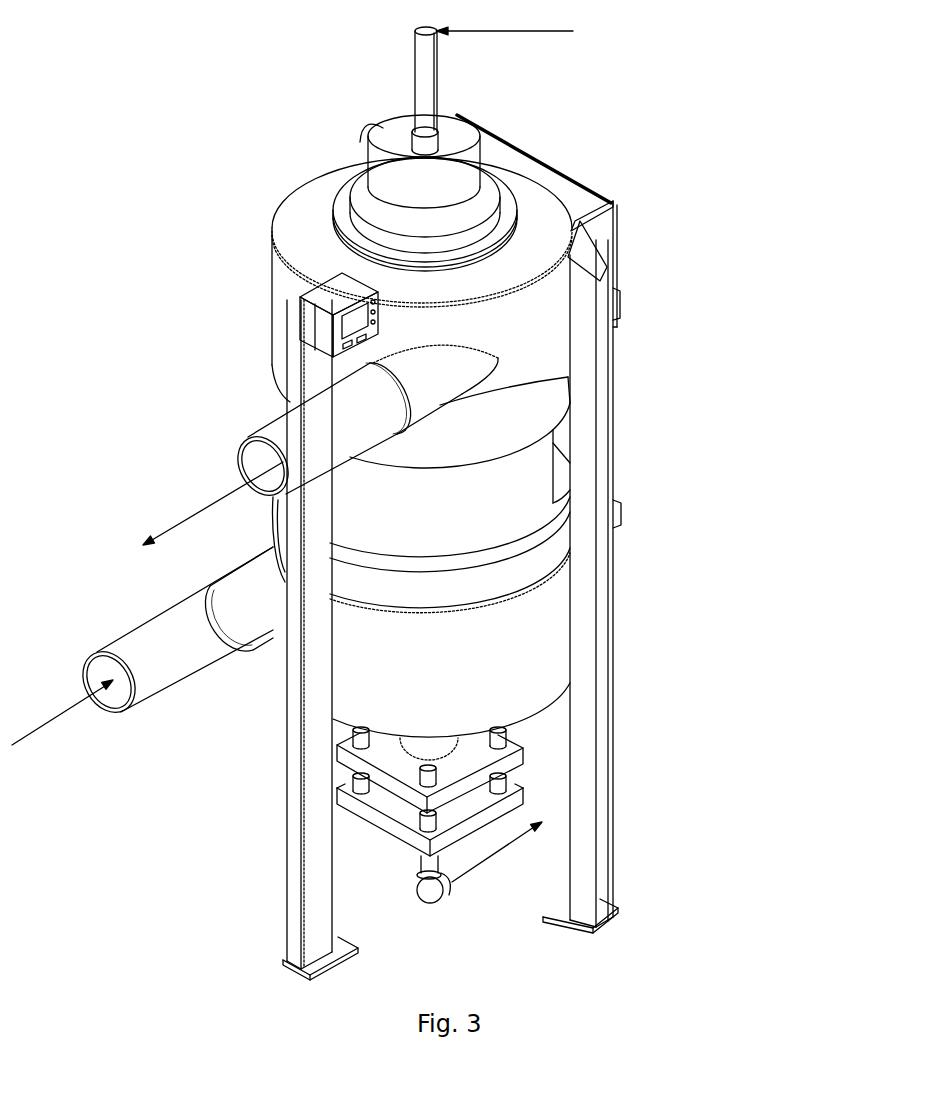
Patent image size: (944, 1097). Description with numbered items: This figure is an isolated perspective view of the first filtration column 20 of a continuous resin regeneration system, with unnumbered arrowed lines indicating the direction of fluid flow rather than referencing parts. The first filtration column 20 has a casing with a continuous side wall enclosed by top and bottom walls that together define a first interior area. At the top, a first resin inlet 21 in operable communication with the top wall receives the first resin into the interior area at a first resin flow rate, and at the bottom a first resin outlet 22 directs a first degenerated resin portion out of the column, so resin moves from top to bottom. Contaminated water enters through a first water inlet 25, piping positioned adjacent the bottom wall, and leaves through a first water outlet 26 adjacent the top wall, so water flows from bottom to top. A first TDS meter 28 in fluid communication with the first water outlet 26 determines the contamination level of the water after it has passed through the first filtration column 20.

The first filtration column 20 is at (270, 61).
The first resin inlet 21 is at (452, 145).
The first resin outlet 22 is at (420, 750).
The first water inlet 25 is at (183, 652).
The first water outlet 26 is at (283, 435).
The first TDS meter 28 is at (340, 298).